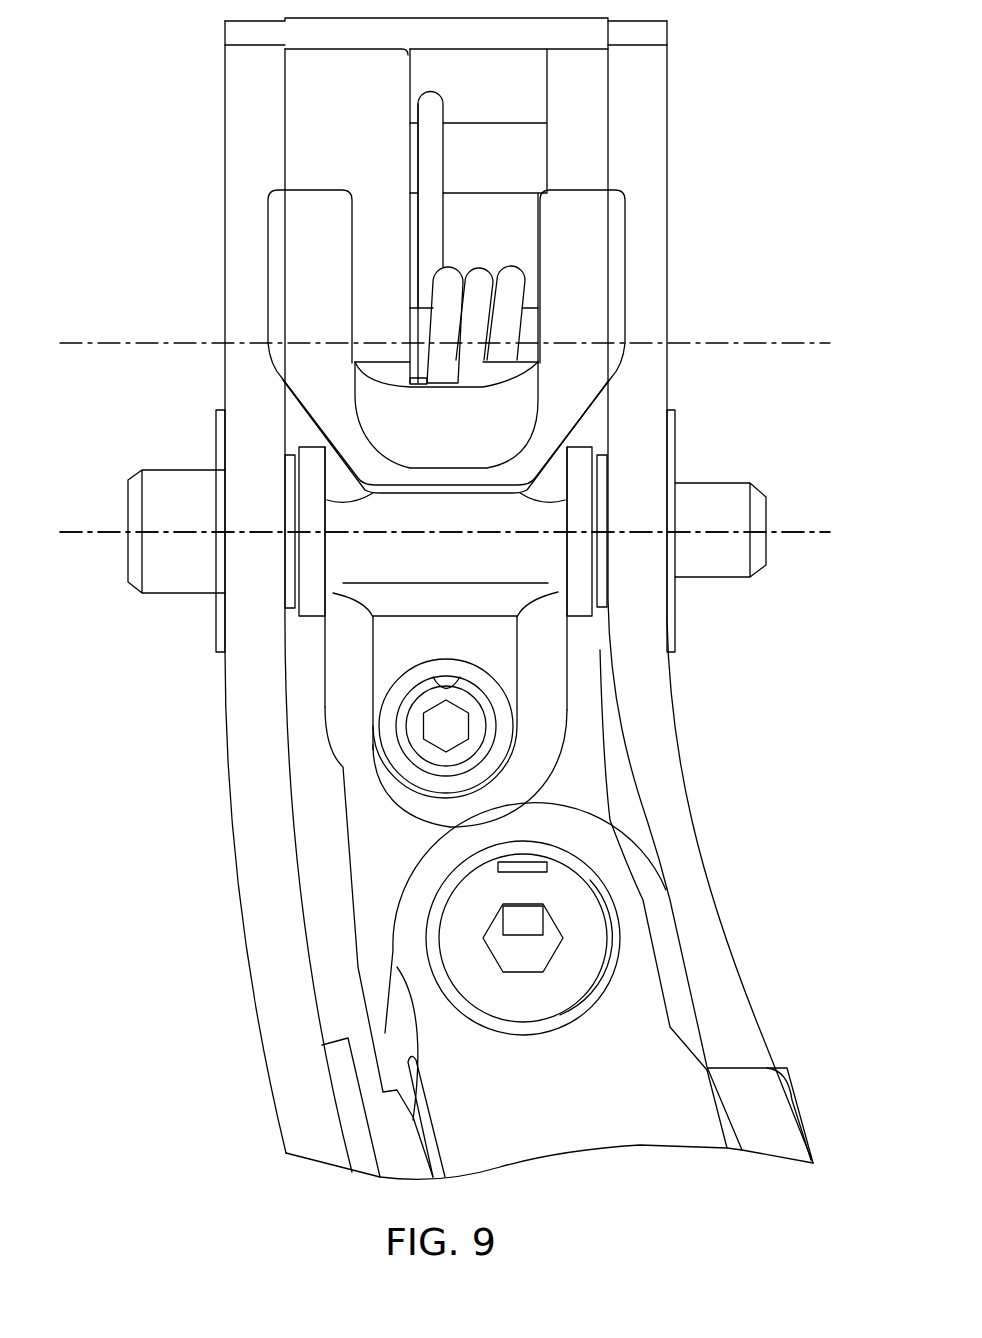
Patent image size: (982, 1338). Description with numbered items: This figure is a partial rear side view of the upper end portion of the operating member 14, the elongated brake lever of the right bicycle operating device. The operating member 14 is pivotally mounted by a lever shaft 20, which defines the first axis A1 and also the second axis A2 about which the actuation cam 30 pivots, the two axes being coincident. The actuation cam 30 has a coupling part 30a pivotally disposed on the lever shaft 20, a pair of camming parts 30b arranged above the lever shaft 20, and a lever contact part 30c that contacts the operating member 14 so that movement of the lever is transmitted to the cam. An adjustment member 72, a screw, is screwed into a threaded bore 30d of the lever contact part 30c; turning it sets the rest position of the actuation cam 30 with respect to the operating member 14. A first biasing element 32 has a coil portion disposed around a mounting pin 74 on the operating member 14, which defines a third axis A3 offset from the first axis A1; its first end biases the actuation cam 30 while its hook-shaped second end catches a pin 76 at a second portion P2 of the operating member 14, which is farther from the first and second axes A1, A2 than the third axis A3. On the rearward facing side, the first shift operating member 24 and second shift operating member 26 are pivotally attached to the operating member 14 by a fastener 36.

The operating member 14 is at (222, 144).
The lever shaft 20 is at (715, 483).
The first shift operating member 24 is at (770, 1122).
The second shift operating member 26 is at (627, 1065).
The actuation cam 30 is at (435, 660).
The coupling part 30a is at (555, 490).
The camming parts 30b is at (310, 190).
The lever contact part 30c is at (547, 763).
The threaded bore 30d is at (463, 690).
The first biasing element 32 is at (404, 252).
The fastener 36 is at (578, 942).
The adjustment member 72 is at (412, 735).
The mounting pin 74 is at (530, 325).
The pin 76 is at (472, 120).
The second portion P2 is at (505, 155).
The first axis A1 is at (75, 540).
The second axis A2 is at (442, 577).
The third axis A3 is at (70, 338).